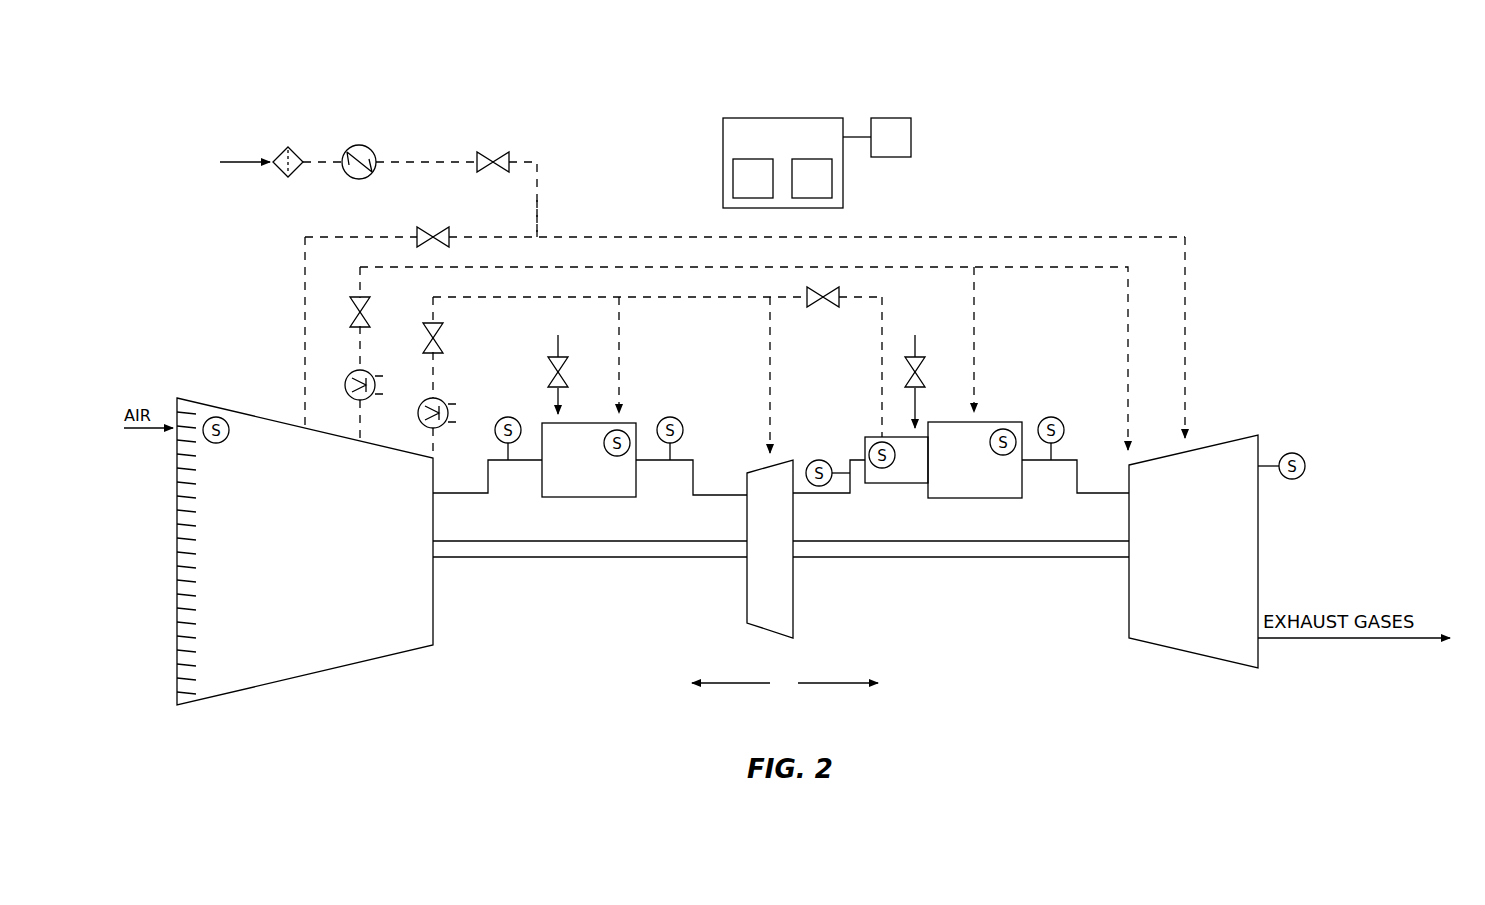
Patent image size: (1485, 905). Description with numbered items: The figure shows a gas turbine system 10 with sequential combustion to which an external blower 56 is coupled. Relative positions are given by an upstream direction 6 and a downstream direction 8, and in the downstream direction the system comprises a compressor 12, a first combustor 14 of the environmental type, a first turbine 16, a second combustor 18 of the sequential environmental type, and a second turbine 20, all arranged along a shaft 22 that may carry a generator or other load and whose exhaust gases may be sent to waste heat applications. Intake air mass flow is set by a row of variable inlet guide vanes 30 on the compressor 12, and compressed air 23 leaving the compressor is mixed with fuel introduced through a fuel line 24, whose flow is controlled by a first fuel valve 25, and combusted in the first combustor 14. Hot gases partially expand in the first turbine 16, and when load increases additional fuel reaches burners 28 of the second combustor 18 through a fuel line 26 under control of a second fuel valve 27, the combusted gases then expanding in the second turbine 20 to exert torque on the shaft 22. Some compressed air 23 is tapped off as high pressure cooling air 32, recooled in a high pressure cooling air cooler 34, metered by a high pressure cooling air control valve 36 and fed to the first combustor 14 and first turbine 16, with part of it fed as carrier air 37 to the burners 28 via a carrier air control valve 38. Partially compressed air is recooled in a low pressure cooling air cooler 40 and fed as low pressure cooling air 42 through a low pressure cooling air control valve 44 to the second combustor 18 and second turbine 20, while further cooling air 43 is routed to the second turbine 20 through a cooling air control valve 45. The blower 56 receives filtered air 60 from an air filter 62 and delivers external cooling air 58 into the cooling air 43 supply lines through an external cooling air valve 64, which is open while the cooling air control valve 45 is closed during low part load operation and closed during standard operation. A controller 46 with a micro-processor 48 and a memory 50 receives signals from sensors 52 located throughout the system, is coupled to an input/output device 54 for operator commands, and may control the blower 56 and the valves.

The upstream direction 6 is at (728, 684).
The downstream direction 8 is at (840, 684).
The gas turbine system 10 is at (1236, 151).
The compressor 12 is at (303, 677).
The first combustor 14 is at (588, 498).
The first turbine 16 is at (765, 637).
The second combustor 18 is at (975, 499).
The second turbine 20 is at (1192, 659).
The shaft 22 is at (963, 560).
The compressed air 23 is at (470, 496).
The fuel line 24 is at (560, 346).
The first fuel valve 25 is at (566, 376).
The fuel line 26 is at (917, 346).
The second fuel valve 27 is at (923, 376).
The burners 28 is at (899, 485).
The variable inlet guide vanes 30 is at (206, 539).
The high pressure cooling air 32 is at (658, 297).
The high pressure cooling air cooler 34 is at (440, 400).
The high pressure cooling air control valve 36 is at (441, 342).
The carrier air 37 is at (882, 310).
The carrier air control valve 38 is at (818, 305).
The low pressure cooling air cooler 40 is at (365, 372).
The low pressure cooling air 42 is at (573, 267).
The cooling air 43 is at (633, 237).
The low pressure cooling air control valve 44 is at (368, 316).
The cooling air control valve 45 is at (433, 225).
The controller 46 is at (793, 150).
The micro-processor 48 is at (764, 189).
The memory 50 is at (823, 189).
The sensors 52 is at (222, 444).
The input/output device 54 is at (902, 148).
The blower 56 is at (367, 149).
The external cooling air 58 is at (540, 188).
The filtered air 60 is at (325, 168).
The air filter 62 is at (300, 151).
The external cooling air valve 64 is at (498, 150).